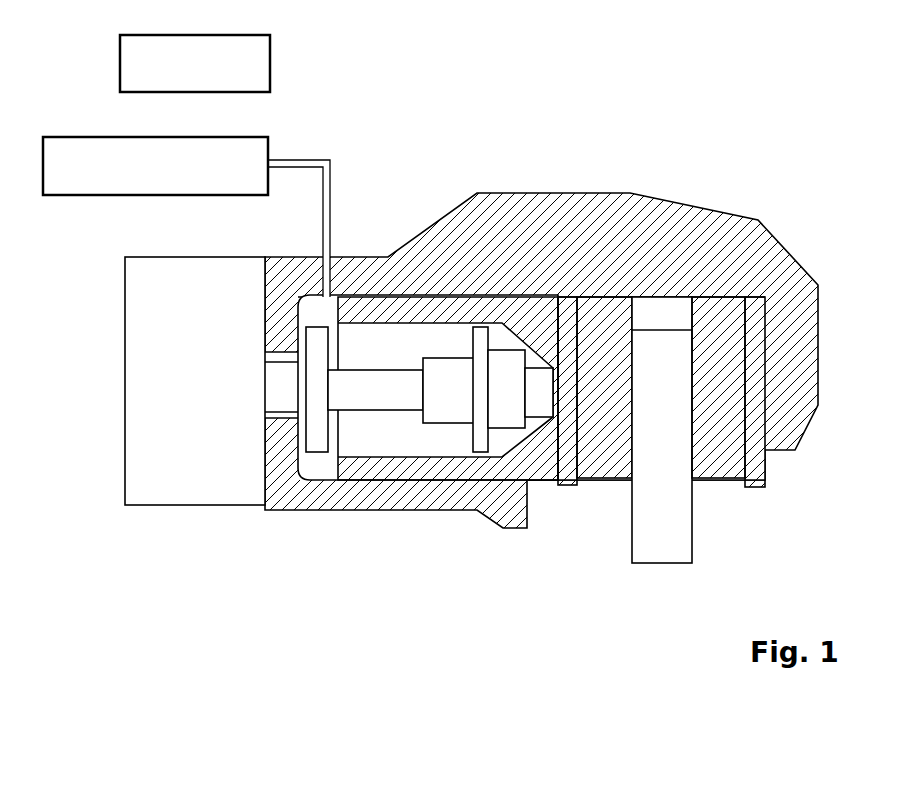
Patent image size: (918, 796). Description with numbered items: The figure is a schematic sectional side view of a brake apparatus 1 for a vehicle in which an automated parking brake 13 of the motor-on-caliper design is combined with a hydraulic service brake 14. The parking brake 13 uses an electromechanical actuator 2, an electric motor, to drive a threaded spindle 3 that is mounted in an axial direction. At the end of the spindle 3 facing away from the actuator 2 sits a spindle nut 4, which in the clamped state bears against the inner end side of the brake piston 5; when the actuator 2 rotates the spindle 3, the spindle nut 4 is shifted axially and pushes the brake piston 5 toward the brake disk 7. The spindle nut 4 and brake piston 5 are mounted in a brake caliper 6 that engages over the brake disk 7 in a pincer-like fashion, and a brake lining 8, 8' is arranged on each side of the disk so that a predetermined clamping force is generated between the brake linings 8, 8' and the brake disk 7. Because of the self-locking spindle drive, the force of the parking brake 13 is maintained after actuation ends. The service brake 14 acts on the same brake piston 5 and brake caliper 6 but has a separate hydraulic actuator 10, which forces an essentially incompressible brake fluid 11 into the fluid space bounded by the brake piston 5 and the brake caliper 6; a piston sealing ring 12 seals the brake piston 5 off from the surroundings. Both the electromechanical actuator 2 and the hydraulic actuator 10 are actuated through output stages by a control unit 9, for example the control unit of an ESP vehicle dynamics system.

The brake apparatus 1 is at (734, 128).
The electromechanical actuator 2 is at (204, 290).
The spindle 3 is at (400, 400).
The spindle nut 4 is at (433, 418).
The brake piston 5 is at (358, 470).
The brake caliper 6 is at (580, 210).
The brake disk 7 is at (662, 545).
The brake lining 8 is at (604, 415).
The brake lining 8' is at (718, 415).
The control unit 9 is at (280, 62).
The hydraulic actuator 10 is at (268, 152).
The brake fluid 11 is at (313, 470).
The piston sealing ring 12 is at (470, 455).
The automated parking brake 13 is at (204, 536).
The service brake 14 is at (356, 96).